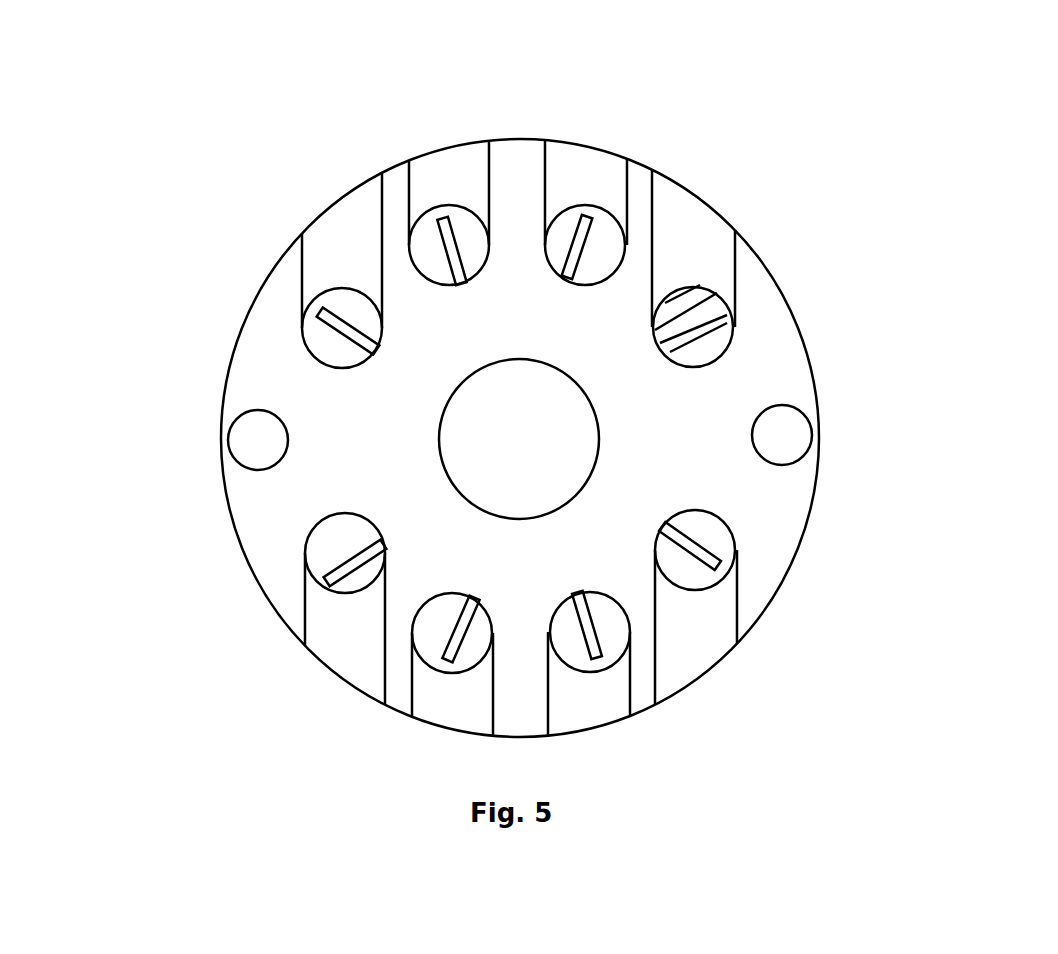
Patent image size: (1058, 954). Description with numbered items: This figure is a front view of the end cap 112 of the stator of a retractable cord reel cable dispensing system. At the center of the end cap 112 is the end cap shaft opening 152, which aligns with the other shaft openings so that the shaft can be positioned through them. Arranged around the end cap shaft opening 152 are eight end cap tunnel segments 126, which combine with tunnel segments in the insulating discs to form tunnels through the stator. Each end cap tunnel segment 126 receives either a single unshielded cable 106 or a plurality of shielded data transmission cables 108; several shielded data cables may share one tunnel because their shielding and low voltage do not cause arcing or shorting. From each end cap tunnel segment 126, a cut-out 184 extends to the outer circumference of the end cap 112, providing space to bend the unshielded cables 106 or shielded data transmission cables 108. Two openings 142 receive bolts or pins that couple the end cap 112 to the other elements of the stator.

The unshielded cable 106 is at (337, 322).
The shielded data transmission cable 108 is at (690, 347).
The end cap 112 is at (345, 468).
The end cap tunnel segment 126 is at (323, 350).
The opening 142 is at (257, 440).
The end cap shaft opening 152 is at (518, 438).
The cut-out 184 is at (327, 243).